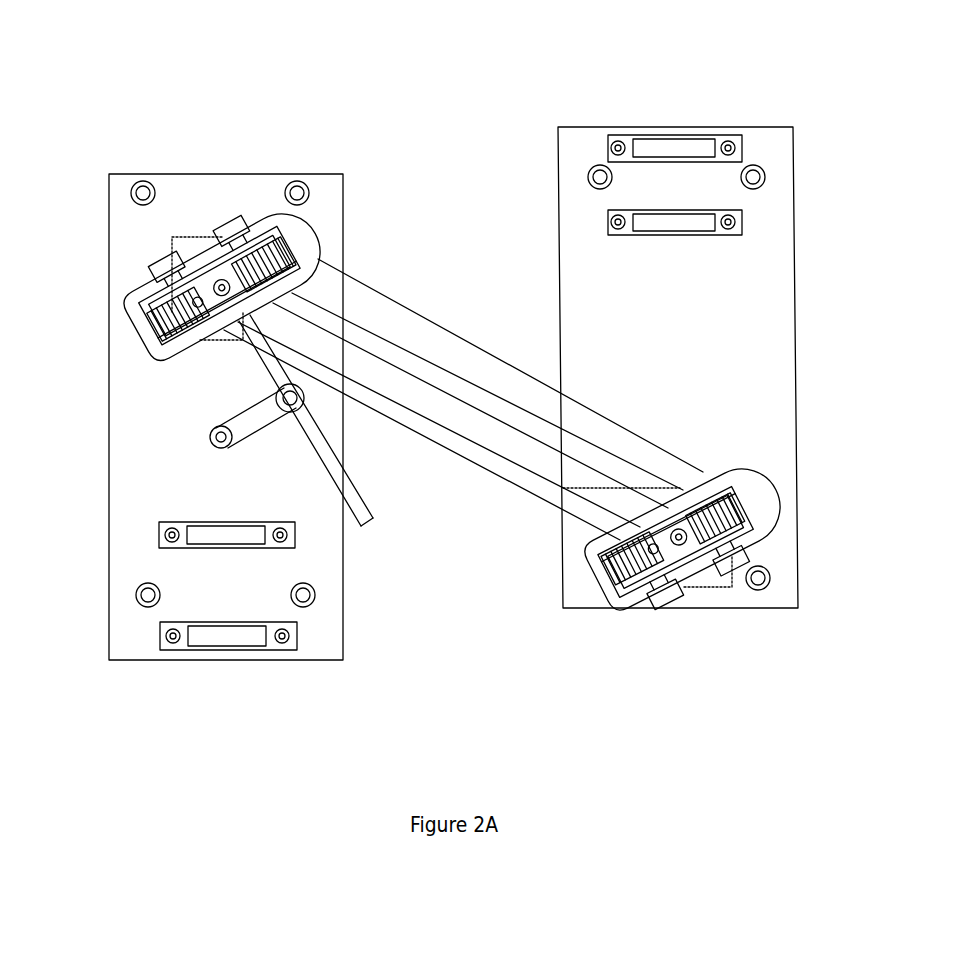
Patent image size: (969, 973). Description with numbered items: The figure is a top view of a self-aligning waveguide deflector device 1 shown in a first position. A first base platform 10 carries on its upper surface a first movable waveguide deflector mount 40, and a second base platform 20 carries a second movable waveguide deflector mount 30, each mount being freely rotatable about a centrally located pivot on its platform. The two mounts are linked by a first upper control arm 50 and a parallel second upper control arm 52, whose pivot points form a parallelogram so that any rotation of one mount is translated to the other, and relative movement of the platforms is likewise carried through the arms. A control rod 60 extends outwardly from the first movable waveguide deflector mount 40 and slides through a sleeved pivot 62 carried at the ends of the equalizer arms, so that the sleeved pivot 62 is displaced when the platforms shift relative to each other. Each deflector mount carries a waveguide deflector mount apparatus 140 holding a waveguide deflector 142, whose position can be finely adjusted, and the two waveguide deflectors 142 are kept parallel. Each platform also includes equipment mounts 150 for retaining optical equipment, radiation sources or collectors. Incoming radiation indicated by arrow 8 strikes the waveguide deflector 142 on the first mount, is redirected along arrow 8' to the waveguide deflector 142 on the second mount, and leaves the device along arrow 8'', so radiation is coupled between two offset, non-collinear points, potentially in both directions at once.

The self-aligning waveguide deflector device 1 is at (603, 38).
The first base platform 10 is at (343, 211).
The second base platform 20 is at (558, 184).
The second movable waveguide deflector mount 30 is at (604, 615).
The first movable waveguide deflector mount 40 is at (118, 312).
The first upper control arm 50 is at (466, 350).
The second upper control arm 52 is at (540, 470).
The control rod 60 is at (378, 515).
The sleeved pivot 62 is at (300, 403).
The waveguide deflector mount apparatus 140 is at (230, 226).
The waveguide deflector 142 is at (200, 357).
The equipment mount 150 is at (160, 535).
The arrow B 8 is at (236, 725).
The arrow B' 8' is at (418, 386).
The arrow B" 8'' is at (693, 86).